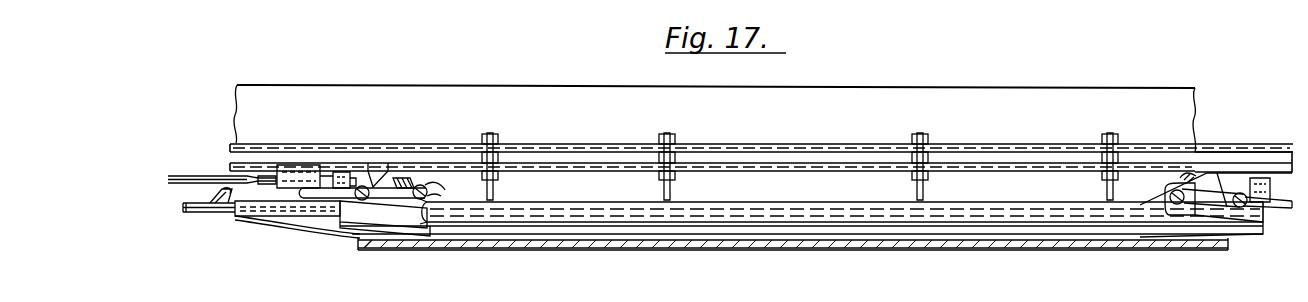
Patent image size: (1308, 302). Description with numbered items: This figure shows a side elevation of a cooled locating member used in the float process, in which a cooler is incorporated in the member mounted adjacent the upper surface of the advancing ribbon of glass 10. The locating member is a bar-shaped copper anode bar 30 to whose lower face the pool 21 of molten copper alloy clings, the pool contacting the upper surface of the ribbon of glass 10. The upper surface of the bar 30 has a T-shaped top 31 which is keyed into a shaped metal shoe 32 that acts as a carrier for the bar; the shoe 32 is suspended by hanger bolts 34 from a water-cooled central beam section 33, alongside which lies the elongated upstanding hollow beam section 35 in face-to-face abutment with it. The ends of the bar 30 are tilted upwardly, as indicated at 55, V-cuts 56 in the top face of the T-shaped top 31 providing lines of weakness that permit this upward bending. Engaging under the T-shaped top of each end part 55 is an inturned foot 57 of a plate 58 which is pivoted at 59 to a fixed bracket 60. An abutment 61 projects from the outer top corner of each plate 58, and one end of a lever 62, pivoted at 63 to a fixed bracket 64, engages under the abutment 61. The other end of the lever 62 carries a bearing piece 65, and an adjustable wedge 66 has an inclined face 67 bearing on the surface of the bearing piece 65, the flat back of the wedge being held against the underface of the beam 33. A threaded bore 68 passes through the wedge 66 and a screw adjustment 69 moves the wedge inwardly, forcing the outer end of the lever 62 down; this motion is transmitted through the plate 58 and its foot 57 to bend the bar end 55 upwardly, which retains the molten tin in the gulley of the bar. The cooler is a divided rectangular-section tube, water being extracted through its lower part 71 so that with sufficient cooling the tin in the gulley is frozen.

The ribbon of glass 10 is at (520, 247).
The pool of molten copper alloy 21 is at (580, 243).
The copper anode bar 30 is at (672, 226).
The T-shaped top 31 is at (588, 208).
The metal shoe 32 is at (770, 208).
The central beam section 33 is at (561, 143).
The hanger bolts 34 is at (492, 188).
The hollow beam section 35 is at (479, 93).
The tilted bar ends 55 is at (345, 229).
The V-cuts 56 is at (424, 197).
The inturned foot 57 is at (365, 240).
The plate 58 is at (420, 185).
The pivot 59 is at (430, 192).
The fixed bracket 60 is at (440, 196).
The abutment 61 is at (402, 177).
The lever 62 is at (317, 200).
The lever pivot 63 is at (361, 186).
The fixed bracket 64 is at (375, 170).
The bearing piece 65 is at (305, 205).
The adjustable wedge 66 is at (288, 168).
The inclined face 67 is at (280, 193).
The threaded bore 68 is at (310, 172).
The screw adjustment 69 is at (198, 176).
The lower cooler tube part 71 is at (200, 212).